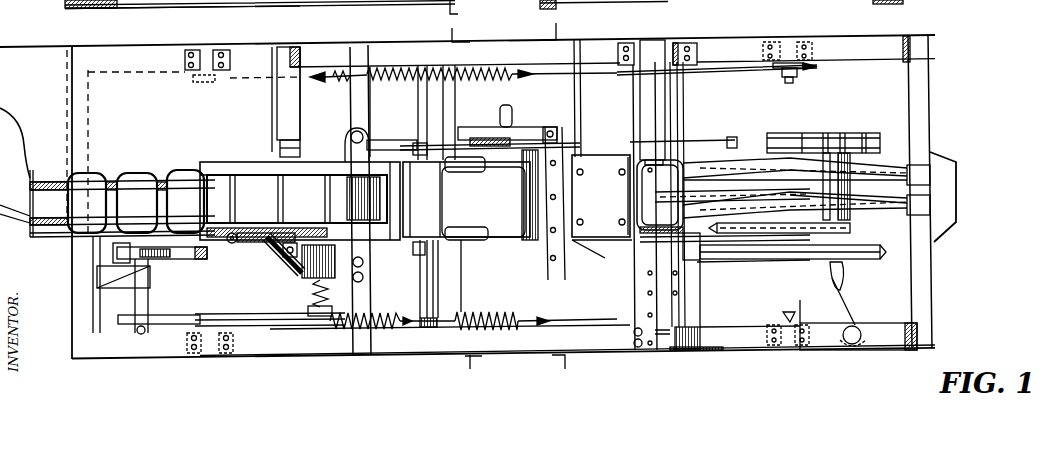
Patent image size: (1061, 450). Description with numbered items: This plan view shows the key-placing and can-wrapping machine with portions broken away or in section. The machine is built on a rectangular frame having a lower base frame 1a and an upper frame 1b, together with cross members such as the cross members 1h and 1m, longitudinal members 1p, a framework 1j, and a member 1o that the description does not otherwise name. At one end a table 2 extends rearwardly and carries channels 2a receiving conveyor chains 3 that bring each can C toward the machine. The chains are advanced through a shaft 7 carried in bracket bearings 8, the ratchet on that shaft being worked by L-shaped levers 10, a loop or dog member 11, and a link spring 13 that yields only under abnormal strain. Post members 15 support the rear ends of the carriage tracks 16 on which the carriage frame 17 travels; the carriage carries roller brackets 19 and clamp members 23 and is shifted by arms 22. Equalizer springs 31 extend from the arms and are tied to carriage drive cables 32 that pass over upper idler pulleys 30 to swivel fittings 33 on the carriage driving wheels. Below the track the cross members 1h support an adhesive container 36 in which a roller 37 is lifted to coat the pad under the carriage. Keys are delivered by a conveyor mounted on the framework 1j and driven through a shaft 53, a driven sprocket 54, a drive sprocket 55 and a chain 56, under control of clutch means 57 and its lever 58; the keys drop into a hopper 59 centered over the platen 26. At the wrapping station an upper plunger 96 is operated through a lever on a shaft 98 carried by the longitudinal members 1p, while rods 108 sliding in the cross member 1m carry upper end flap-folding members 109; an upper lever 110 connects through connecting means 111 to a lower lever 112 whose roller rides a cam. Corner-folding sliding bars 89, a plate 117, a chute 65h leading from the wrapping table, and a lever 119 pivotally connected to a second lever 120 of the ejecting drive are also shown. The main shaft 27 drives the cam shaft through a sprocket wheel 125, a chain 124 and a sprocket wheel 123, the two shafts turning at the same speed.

The table 2 is at (108, 80).
The upper idler pulleys 30 is at (203, 83).
The swivel fitting 33 is at (342, 6).
The arms 22 is at (418, 83).
The sprocket wheel 125 is at (470, 3).
The equalizer springs 31 is at (470, 65).
The lower or base frame 1a is at (605, 44).
The upper frame 1b is at (627, 43).
The chain 124 is at (672, 2).
The cross member 1m is at (657, 110).
The chute 65h is at (683, 92).
The sprocket wheel 123 is at (760, 1).
The cross members 1h is at (917, 125).
The connecting means 111 is at (935, 150).
The post members 15 is at (287, 147).
The carriage tracks 16 is at (382, 150).
The carriage frame 17 is at (450, 150).
The roller brackets 19 is at (530, 140).
The upper end flap-folding members 109 is at (633, 142).
The upper plunger 96 is at (690, 137).
The upper lever 110 is at (753, 137).
The frame member o 1o is at (770, 137).
The shaft 98 is at (837, 137).
The corner-folding sliding bars 89 is at (857, 137).
The framework 1j is at (230, 163).
The can C is at (120, 172).
The main shaft 27 is at (190, 175).
The hopper 59 is at (362, 183).
The channels 2a is at (35, 213).
The platen 26 is at (62, 190).
The conveyor chains 3 is at (47, 190).
The dog member 11 is at (117, 247).
The levers 10 is at (187, 252).
The link spring 13 is at (205, 255).
The clutch means 57 is at (292, 268).
The lever 58 is at (268, 250).
The shaft 7 is at (147, 305).
The bracket bearings 8 is at (98, 282).
The clamp members 23 is at (482, 285).
The roller 37 is at (458, 313).
The adhesive container 36 is at (540, 300).
The rods 108 is at (653, 232).
The lower lever 112 is at (733, 225).
The longitudinal members 1p is at (755, 260).
The lever 119 is at (783, 312).
The lever 120 is at (846, 274).
The drive sprocket 55 is at (133, 332).
The chain 56 is at (177, 320).
The carriage drive cables 32 is at (298, 327).
The shaft 53 is at (313, 330).
The driven sprocket 54 is at (310, 327).
The plate 117 is at (672, 392).